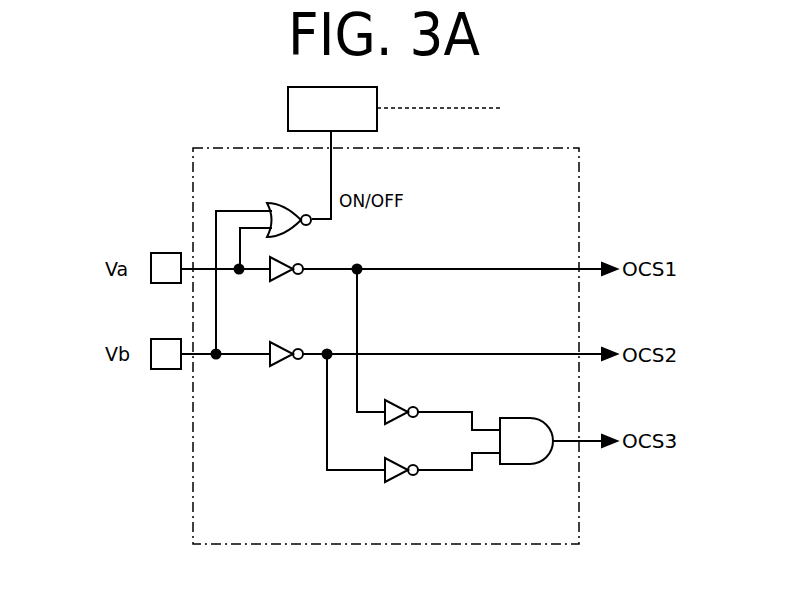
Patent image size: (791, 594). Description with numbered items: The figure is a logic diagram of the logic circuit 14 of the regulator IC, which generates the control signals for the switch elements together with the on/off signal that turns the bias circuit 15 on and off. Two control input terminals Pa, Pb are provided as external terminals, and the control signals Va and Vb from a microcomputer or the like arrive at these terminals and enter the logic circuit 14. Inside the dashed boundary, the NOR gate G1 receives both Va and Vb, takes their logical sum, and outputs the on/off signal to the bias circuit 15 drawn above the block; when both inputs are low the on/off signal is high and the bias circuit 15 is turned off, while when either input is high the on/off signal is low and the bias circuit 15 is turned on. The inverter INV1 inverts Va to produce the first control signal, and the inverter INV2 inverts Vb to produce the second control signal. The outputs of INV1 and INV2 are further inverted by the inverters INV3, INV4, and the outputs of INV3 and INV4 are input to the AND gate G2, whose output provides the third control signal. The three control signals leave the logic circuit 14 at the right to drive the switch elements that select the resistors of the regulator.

The logic circuit 14 is at (579, 182).
The bias circuit 15 is at (288, 105).
The NOR gate G1 is at (275, 203).
The AND gate G2 is at (533, 463).
The inverter INV1 is at (283, 278).
The inverter INV2 is at (283, 365).
The inverter INV3 is at (400, 405).
The inverter INV4 is at (393, 480).
The control input terminal Pa is at (160, 253).
The control input terminal Pb is at (158, 370).